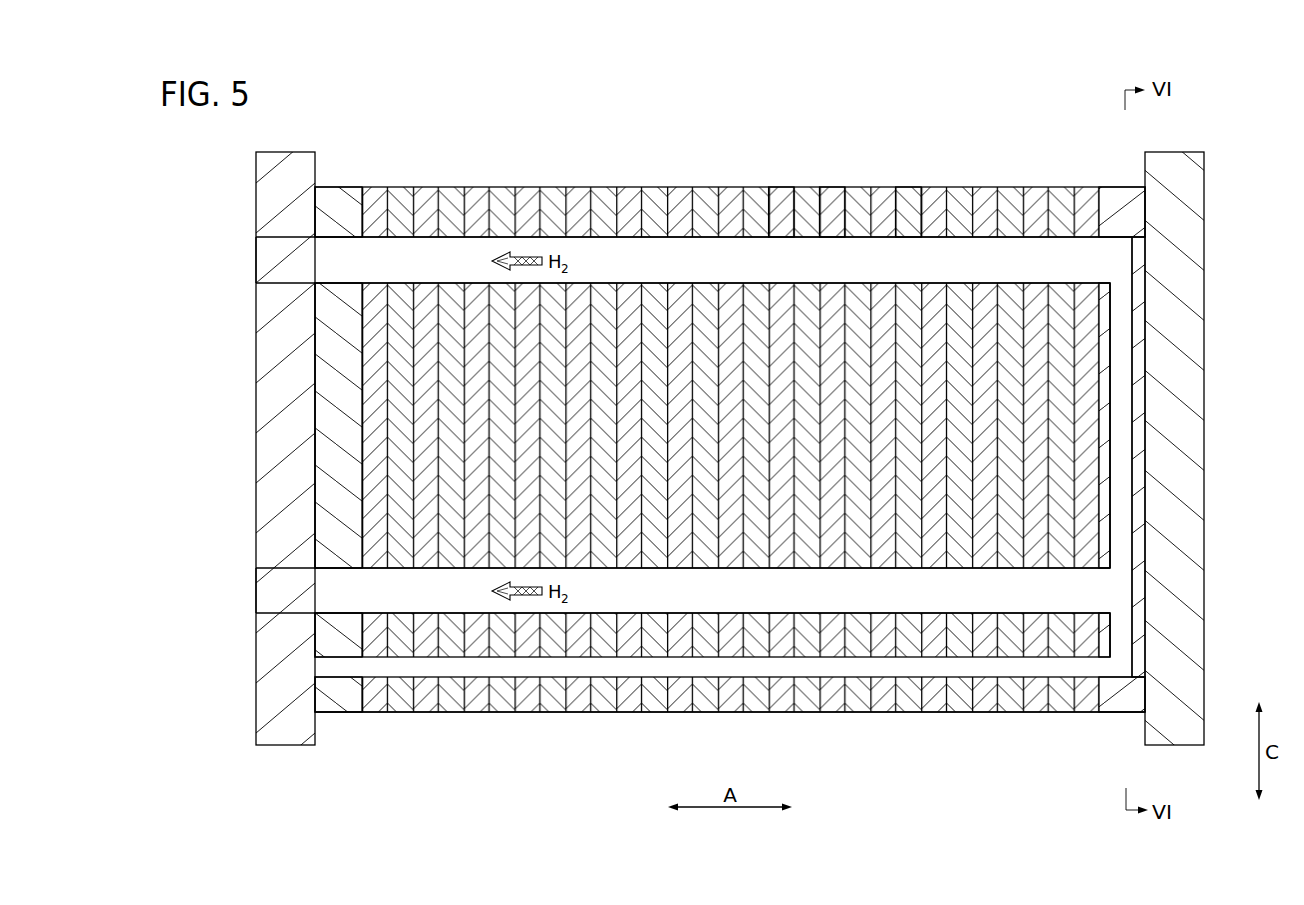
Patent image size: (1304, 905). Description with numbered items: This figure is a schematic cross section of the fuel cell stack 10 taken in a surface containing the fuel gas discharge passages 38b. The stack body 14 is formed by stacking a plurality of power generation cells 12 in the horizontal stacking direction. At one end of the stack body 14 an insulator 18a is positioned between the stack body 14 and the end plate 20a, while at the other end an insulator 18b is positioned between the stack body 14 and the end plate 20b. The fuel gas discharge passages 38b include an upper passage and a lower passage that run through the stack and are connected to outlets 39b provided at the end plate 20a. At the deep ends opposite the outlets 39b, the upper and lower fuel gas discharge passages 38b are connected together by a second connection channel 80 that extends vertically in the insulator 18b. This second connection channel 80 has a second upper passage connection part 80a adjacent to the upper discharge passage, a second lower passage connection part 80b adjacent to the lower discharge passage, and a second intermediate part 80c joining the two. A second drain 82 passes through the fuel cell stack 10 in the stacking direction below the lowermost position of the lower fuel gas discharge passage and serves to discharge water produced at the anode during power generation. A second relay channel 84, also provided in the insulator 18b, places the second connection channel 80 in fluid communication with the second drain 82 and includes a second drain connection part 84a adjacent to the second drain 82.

The fuel cell stack 10 is at (712, 329).
The power generation cell 12 is at (778, 186).
The stack body 14 is at (930, 134).
The insulator 18a is at (340, 186).
The insulator 18b is at (1125, 186).
The end plate 20a is at (295, 151).
The end plate 20b is at (1188, 151).
The fuel gas discharge passage 38b is at (628, 250).
The outlet 39b is at (252, 257).
The second connection channel 80 is at (1120, 447).
The second upper passage connection part 80a is at (1117, 262).
The second lower passage connection part 80b is at (1120, 588).
The second intermediate part 80c is at (1122, 340).
The second drain 82 is at (778, 668).
The second relay channel 84 is at (1122, 640).
The second drain connection part 84a is at (1105, 668).